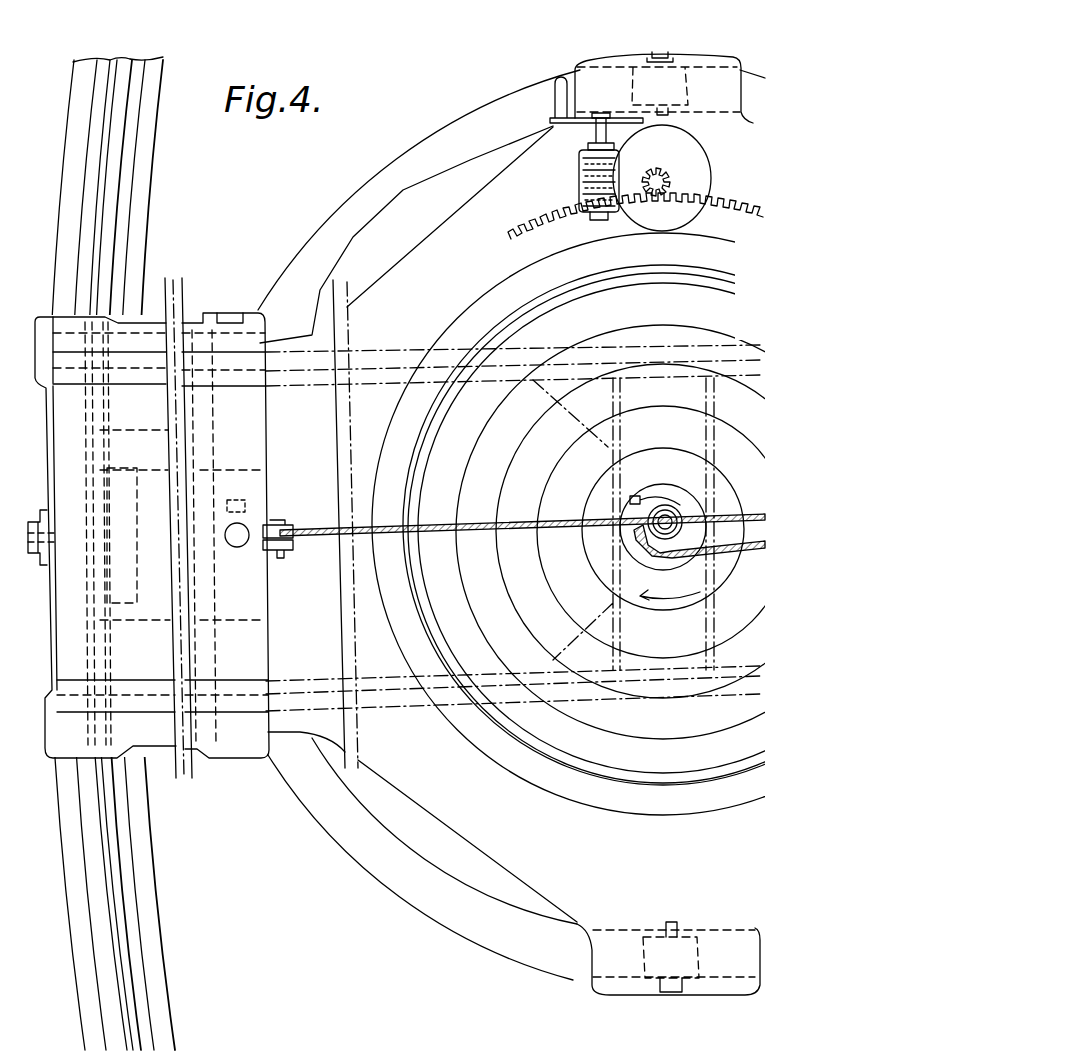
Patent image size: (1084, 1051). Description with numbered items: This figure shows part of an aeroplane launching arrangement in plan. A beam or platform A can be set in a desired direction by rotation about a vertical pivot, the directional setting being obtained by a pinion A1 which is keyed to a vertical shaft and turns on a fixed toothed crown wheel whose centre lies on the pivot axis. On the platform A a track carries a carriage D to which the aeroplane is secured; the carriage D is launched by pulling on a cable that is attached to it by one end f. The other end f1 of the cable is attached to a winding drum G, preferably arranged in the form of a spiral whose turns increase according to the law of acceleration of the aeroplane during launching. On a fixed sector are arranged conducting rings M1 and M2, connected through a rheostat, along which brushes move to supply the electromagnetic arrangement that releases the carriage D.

The beam or platform A is at (403, 328).
The pinion A1 is at (657, 178).
The carriage D is at (250, 620).
The cable end f is at (295, 530).
The cable end f1 is at (642, 530).
The winding drum G is at (548, 478).
The conducting ring M1 is at (120, 855).
The conducting ring M2 is at (110, 897).